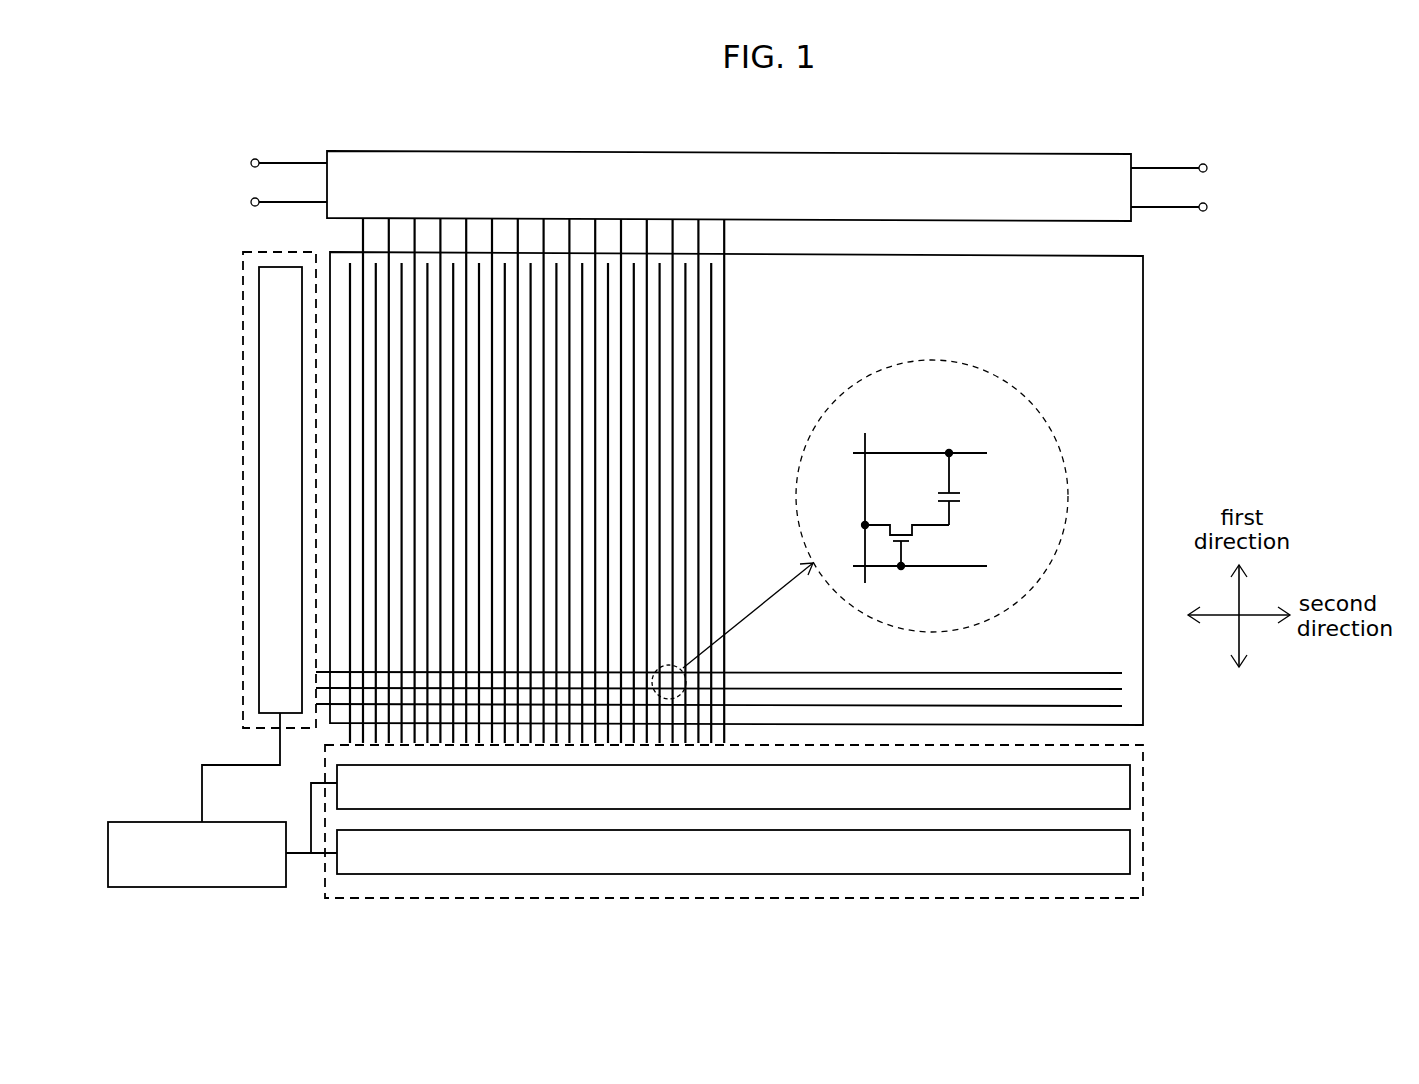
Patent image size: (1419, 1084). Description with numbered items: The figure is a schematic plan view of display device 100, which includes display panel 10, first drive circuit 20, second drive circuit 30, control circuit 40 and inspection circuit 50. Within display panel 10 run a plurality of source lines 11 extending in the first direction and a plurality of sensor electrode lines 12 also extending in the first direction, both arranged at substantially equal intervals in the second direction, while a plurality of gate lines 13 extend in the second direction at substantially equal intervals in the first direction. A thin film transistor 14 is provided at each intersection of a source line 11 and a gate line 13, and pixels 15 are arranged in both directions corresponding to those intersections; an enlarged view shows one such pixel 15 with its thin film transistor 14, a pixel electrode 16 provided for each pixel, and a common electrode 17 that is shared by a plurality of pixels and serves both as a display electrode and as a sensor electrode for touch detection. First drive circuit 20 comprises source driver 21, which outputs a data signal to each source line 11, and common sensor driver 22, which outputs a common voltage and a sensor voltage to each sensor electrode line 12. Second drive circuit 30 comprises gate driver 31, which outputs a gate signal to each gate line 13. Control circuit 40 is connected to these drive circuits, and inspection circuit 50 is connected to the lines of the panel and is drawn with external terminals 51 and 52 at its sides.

The display device 100 is at (1152, 140).
The display panel 10 is at (1143, 310).
The source line 11 is at (712, 328).
The sensor electrode line 12 is at (724, 290).
The gate line 13 is at (1060, 672).
The thin film transistor 14 is at (903, 522).
The pixel 15 is at (1003, 372).
The pixel electrode 16 is at (960, 508).
The common electrode 17 is at (960, 488).
The first drive circuit 20 is at (745, 900).
The source driver 21 is at (1130, 785).
The common sensor driver 22 is at (1130, 853).
The second drive circuit 30 is at (243, 385).
The gate driver 31 is at (259, 450).
The control circuit 40 is at (203, 890).
The inspection circuit 50 is at (1020, 154).
The first inspection terminal 51 is at (275, 163).
The second inspection terminal 52 is at (291, 202).